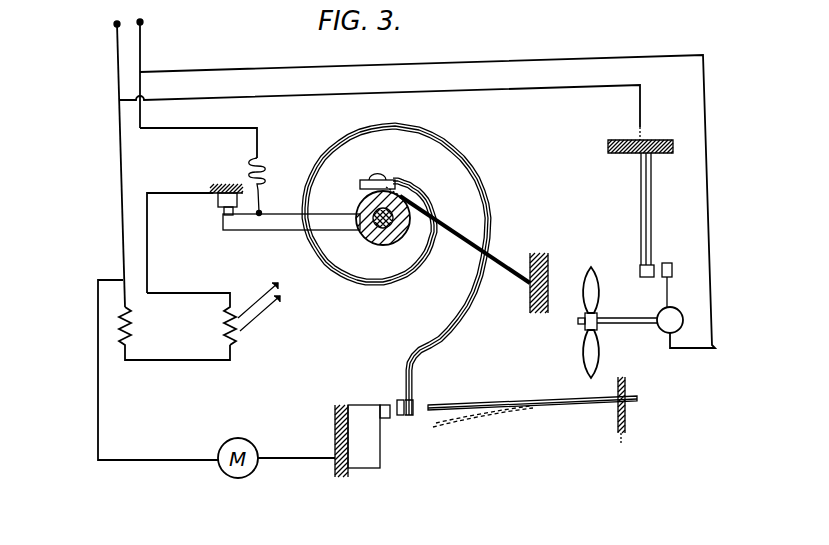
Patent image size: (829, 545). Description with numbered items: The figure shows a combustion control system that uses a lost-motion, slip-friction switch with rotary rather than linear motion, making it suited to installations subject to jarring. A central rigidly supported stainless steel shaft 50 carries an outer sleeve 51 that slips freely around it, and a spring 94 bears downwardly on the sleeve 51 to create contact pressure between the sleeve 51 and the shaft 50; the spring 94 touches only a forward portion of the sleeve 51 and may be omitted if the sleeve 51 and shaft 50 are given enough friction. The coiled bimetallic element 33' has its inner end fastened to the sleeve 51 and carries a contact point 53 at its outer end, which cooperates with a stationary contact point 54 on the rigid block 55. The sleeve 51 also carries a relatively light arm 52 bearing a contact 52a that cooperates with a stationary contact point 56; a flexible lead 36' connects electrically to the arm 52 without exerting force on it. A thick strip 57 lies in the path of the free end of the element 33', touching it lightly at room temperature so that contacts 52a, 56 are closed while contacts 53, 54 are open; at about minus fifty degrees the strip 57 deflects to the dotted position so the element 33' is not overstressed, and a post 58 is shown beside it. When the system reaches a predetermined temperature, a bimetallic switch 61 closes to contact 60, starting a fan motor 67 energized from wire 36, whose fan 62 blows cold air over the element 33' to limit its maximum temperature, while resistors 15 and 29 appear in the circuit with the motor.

The resistor 15 is at (133, 330).
The variable resistor 29 is at (240, 337).
The coiled bimetallic element 33' is at (414, 270).
The wire 36 is at (426, 183).
The flexible lead 36' is at (272, 183).
The shaft 50 is at (368, 208).
The sleeve 51 is at (384, 244).
The arm 52 is at (286, 232).
The contact 52a is at (222, 217).
The contact point 53 is at (395, 403).
The stationary contact point 54 is at (384, 419).
The rigid block 55 is at (115, 68).
The stationary contact point 56 is at (211, 197).
The bimetallic strip 57 is at (472, 405).
The post 58 is at (626, 420).
The contact 60 is at (672, 268).
The bimetallic switch 61 is at (653, 225).
The fan 62 is at (585, 353).
The fan motor 67 is at (676, 315).
The spring 94 is at (457, 230).